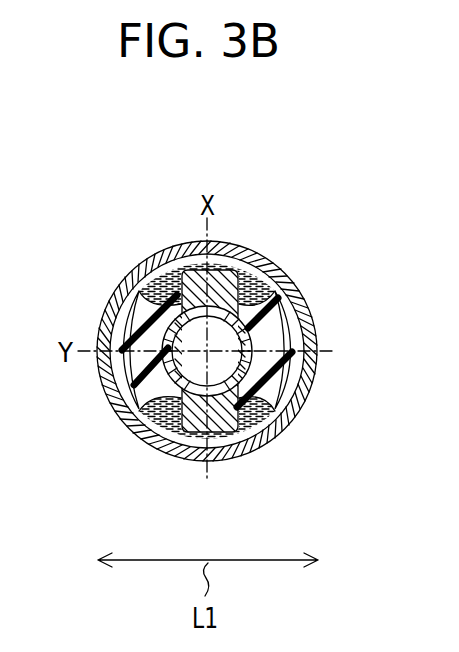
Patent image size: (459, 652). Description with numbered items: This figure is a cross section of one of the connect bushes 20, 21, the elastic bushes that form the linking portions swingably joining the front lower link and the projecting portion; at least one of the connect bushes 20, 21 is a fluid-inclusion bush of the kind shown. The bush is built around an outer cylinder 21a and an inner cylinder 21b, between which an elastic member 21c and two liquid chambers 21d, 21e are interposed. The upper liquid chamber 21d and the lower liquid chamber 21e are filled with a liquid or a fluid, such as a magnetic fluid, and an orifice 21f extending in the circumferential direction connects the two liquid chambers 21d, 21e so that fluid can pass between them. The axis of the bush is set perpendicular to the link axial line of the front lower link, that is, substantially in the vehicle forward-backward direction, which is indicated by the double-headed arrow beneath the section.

The connect bush 20 is at (300, 206).
The connect bush 21 is at (221, 327).
The outer cylinder 21a is at (317, 363).
The inner cylinder 21b is at (268, 440).
The elastic member 21c is at (300, 385).
The liquid chamber 21d is at (270, 268).
The liquid chamber 21e is at (224, 458).
The orifice 21f is at (119, 306).